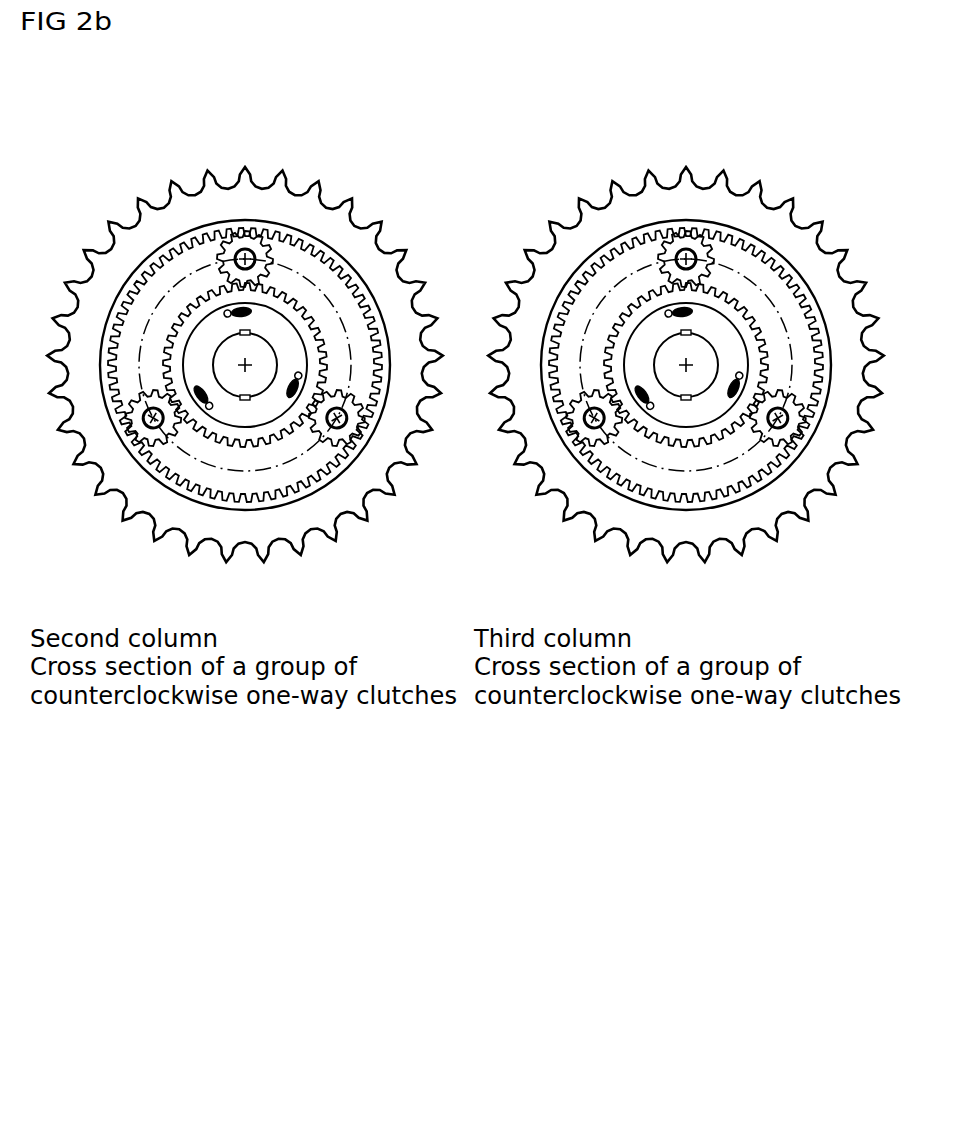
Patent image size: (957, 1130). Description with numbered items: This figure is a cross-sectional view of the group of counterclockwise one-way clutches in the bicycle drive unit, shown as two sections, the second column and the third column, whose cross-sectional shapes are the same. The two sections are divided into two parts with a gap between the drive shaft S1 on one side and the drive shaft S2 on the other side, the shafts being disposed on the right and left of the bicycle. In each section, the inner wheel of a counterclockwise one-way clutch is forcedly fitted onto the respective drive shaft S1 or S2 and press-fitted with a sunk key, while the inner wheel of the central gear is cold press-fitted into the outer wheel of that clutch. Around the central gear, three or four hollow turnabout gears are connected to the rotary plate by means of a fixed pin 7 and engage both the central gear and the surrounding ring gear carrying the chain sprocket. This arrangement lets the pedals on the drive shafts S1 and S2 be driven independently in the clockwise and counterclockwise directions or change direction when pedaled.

The fixed pin 7 is at (785, 425).
The drive shaft S1 is at (224, 368).
The drive shaft S2 is at (687, 392).